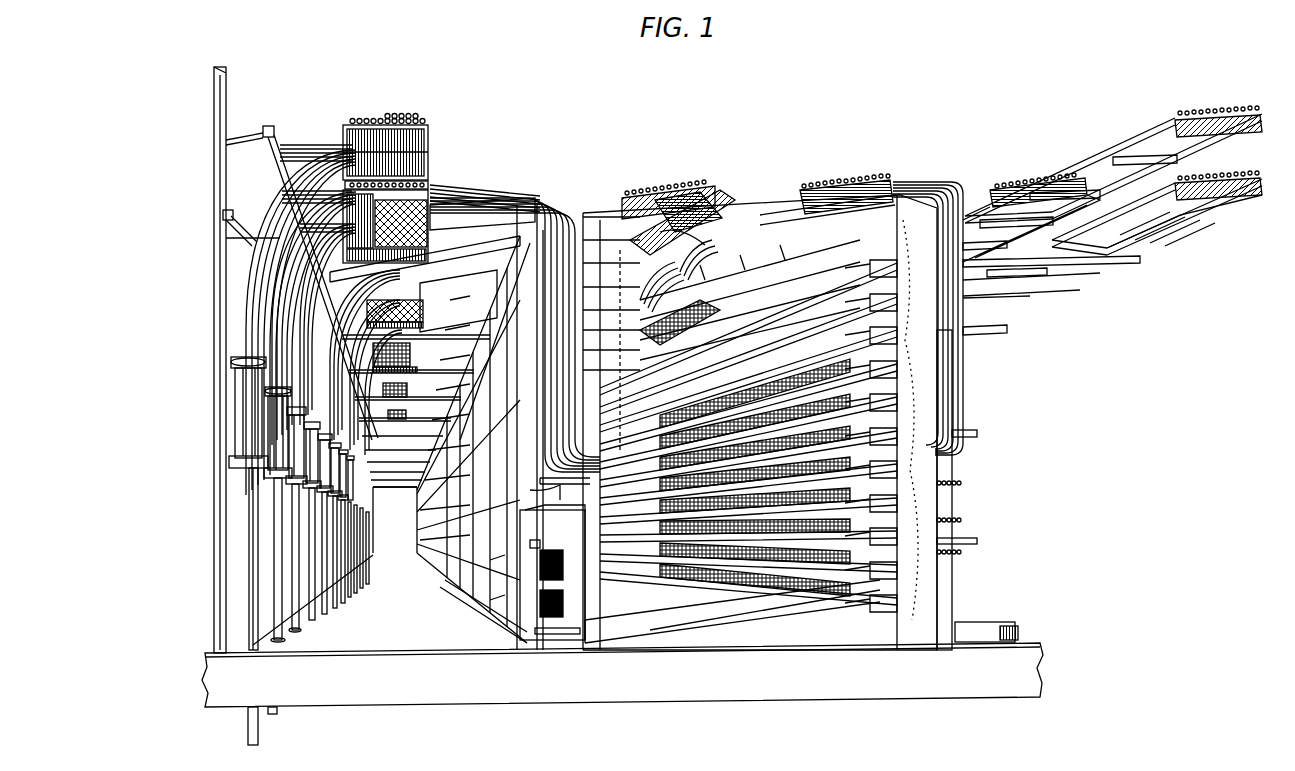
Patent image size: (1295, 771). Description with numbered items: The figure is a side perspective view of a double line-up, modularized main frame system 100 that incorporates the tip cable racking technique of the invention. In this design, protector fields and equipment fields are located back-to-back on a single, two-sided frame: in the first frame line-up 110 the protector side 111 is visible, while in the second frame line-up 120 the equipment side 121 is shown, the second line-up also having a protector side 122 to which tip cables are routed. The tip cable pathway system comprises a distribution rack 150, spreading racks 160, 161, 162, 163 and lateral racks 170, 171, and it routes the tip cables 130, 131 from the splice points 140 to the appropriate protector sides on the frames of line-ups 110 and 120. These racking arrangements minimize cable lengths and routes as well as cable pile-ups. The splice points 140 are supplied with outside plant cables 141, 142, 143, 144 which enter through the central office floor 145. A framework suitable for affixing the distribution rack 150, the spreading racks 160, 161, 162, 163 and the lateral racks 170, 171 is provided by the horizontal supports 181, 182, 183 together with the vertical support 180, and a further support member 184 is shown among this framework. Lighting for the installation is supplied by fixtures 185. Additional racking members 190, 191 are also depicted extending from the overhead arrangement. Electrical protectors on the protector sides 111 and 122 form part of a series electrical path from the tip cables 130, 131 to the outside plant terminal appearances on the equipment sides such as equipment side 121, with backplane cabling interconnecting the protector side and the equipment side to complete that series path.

The main frame system 100 is at (718, 746).
The first frame line-up 110 is at (560, 640).
The protector side 111 is at (495, 590).
The second frame line-up 120 is at (912, 620).
The equipment side 121 is at (760, 585).
The protector side 122 is at (952, 474).
The tip cable 130 is at (286, 160).
The tip cable 131 is at (323, 195).
The splice points 140 is at (275, 432).
The outside plant cable 141 is at (249, 598).
The outside plant cable 142 is at (290, 610).
The outside plant cable 143 is at (300, 598).
The outside plant cable 144 is at (315, 580).
The central office floor 145 is at (992, 688).
The distribution rack 150 is at (430, 135).
The spreading rack 160 is at (432, 205).
The spreading rack 161 is at (622, 204).
The spreading rack 162 is at (801, 200).
The spreading rack 163 is at (987, 200).
The lateral rack 170 is at (514, 220).
The lateral rack 171 is at (440, 330).
The vertical support 180 is at (213, 101).
The horizontal support 181 is at (222, 229).
The horizontal support 182 is at (282, 236).
The horizontal support 183 is at (1114, 270).
The diagonal strut 184 is at (270, 126).
The lighting fixture 185 is at (688, 238).
The extended circuit board 190 is at (1147, 135).
The extended circuit board 191 is at (1262, 190).